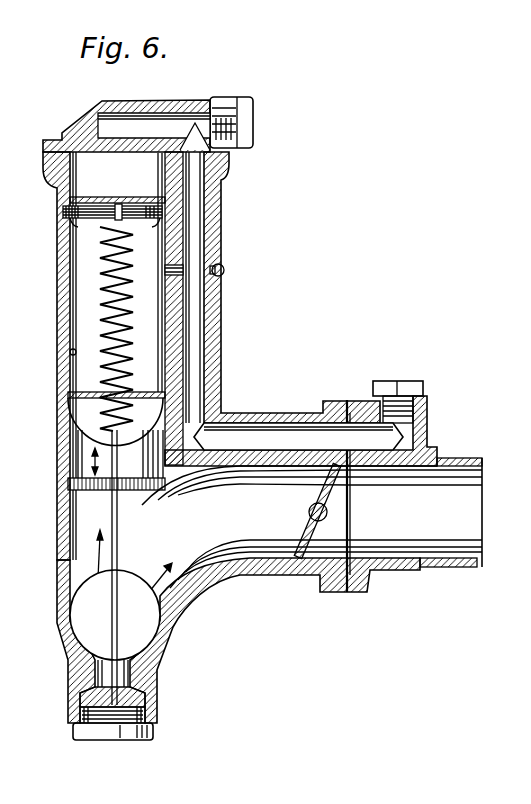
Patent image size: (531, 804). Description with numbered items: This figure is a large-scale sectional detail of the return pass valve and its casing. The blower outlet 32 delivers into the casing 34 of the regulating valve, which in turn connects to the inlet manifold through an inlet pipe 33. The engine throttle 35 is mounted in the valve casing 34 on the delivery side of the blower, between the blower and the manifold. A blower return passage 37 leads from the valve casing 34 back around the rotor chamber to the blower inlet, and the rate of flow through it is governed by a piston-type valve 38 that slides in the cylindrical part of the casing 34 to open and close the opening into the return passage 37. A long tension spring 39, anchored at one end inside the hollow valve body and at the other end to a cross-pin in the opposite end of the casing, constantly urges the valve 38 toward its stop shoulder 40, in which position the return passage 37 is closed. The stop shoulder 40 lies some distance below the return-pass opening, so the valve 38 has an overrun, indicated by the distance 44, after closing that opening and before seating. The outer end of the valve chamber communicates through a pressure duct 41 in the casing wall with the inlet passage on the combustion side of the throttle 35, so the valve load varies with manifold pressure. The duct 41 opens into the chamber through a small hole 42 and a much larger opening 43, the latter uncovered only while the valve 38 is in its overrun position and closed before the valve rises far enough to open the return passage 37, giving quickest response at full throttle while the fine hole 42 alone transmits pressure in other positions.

The blower outlet 32 is at (85, 611).
The inlet pipe 33 is at (467, 472).
The valve casing 34 is at (218, 304).
The engine throttle 35 is at (316, 548).
The blower return passage 37 is at (82, 412).
The piston-type valve 38 is at (70, 352).
The tension spring 39 is at (102, 318).
The stop shoulder 40 is at (77, 492).
The pressure duct 41 is at (152, 125).
The small opening 42 is at (119, 140).
The larger opening 43 is at (182, 270).
The overrun distance 44 is at (92, 462).